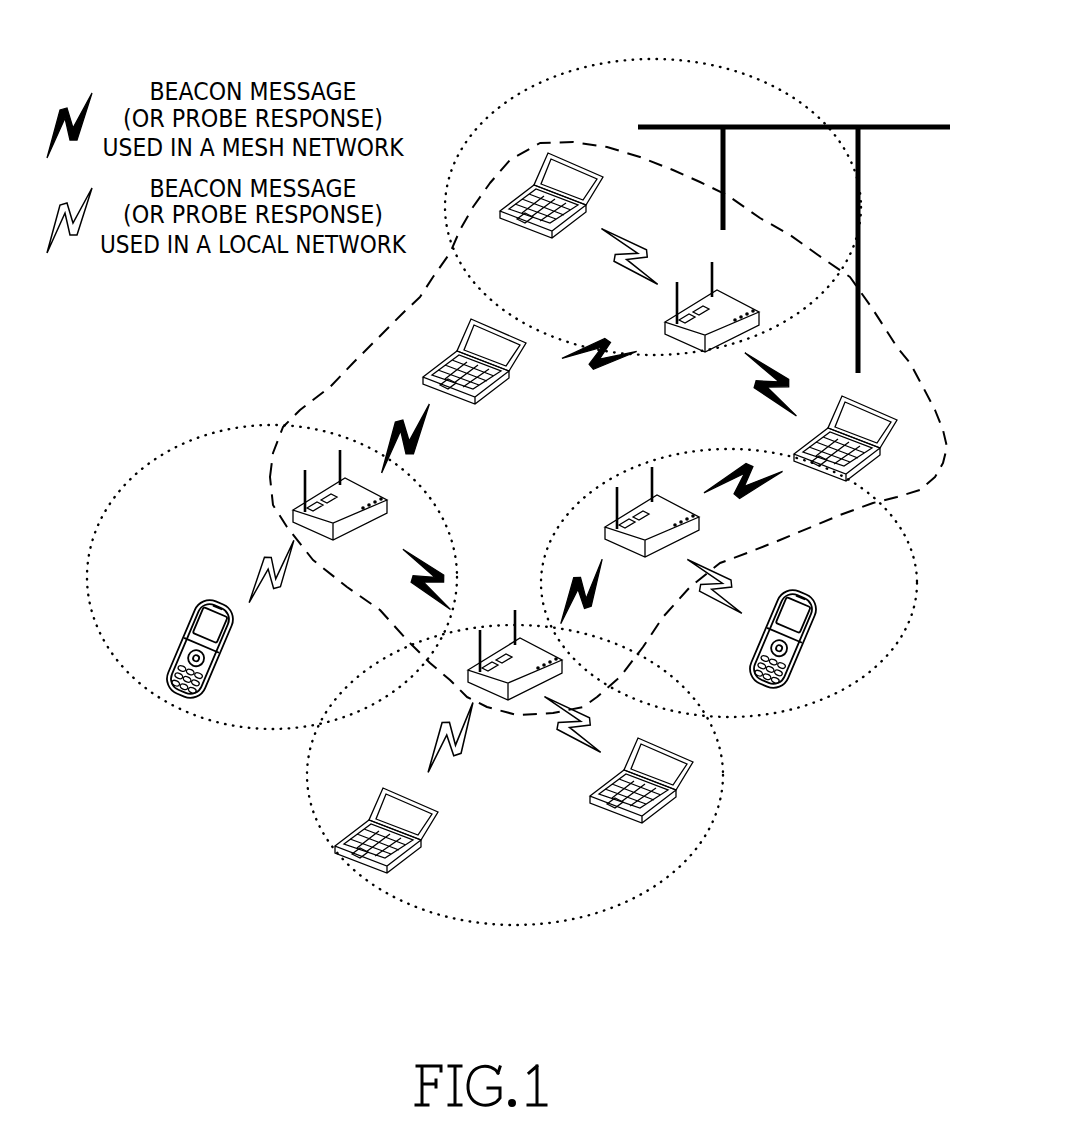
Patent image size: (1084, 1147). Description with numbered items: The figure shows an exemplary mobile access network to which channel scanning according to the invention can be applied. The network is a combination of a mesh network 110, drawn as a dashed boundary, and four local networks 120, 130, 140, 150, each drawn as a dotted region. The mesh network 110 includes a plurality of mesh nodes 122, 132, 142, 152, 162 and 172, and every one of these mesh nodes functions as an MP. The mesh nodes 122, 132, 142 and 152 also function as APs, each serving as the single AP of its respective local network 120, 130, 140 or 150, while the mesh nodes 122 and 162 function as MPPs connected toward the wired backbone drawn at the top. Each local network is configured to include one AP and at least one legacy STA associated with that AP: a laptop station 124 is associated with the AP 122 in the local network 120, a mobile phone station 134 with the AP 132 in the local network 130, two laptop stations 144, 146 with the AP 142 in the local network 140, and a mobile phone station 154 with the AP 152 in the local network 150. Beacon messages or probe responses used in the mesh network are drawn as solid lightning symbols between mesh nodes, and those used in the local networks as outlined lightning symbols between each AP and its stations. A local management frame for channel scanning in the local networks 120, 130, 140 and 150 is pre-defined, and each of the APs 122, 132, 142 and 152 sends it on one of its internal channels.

The mesh network 110 is at (384, 334).
The local network 120 is at (648, 58).
The mesh node 122 is at (735, 287).
The laptop station 124 is at (600, 200).
The local network 130 is at (270, 422).
The mesh node 132 is at (378, 484).
The mobile phone station 134 is at (215, 676).
The local network 140 is at (516, 927).
The mesh node 142 is at (560, 667).
The laptop station 144 is at (415, 856).
The laptop station 146 is at (670, 804).
The local network 150 is at (732, 444).
The mesh node 152 is at (688, 524).
The mobile phone station 154 is at (800, 661).
The mesh node 162 is at (880, 461).
The mesh node 172 is at (500, 390).